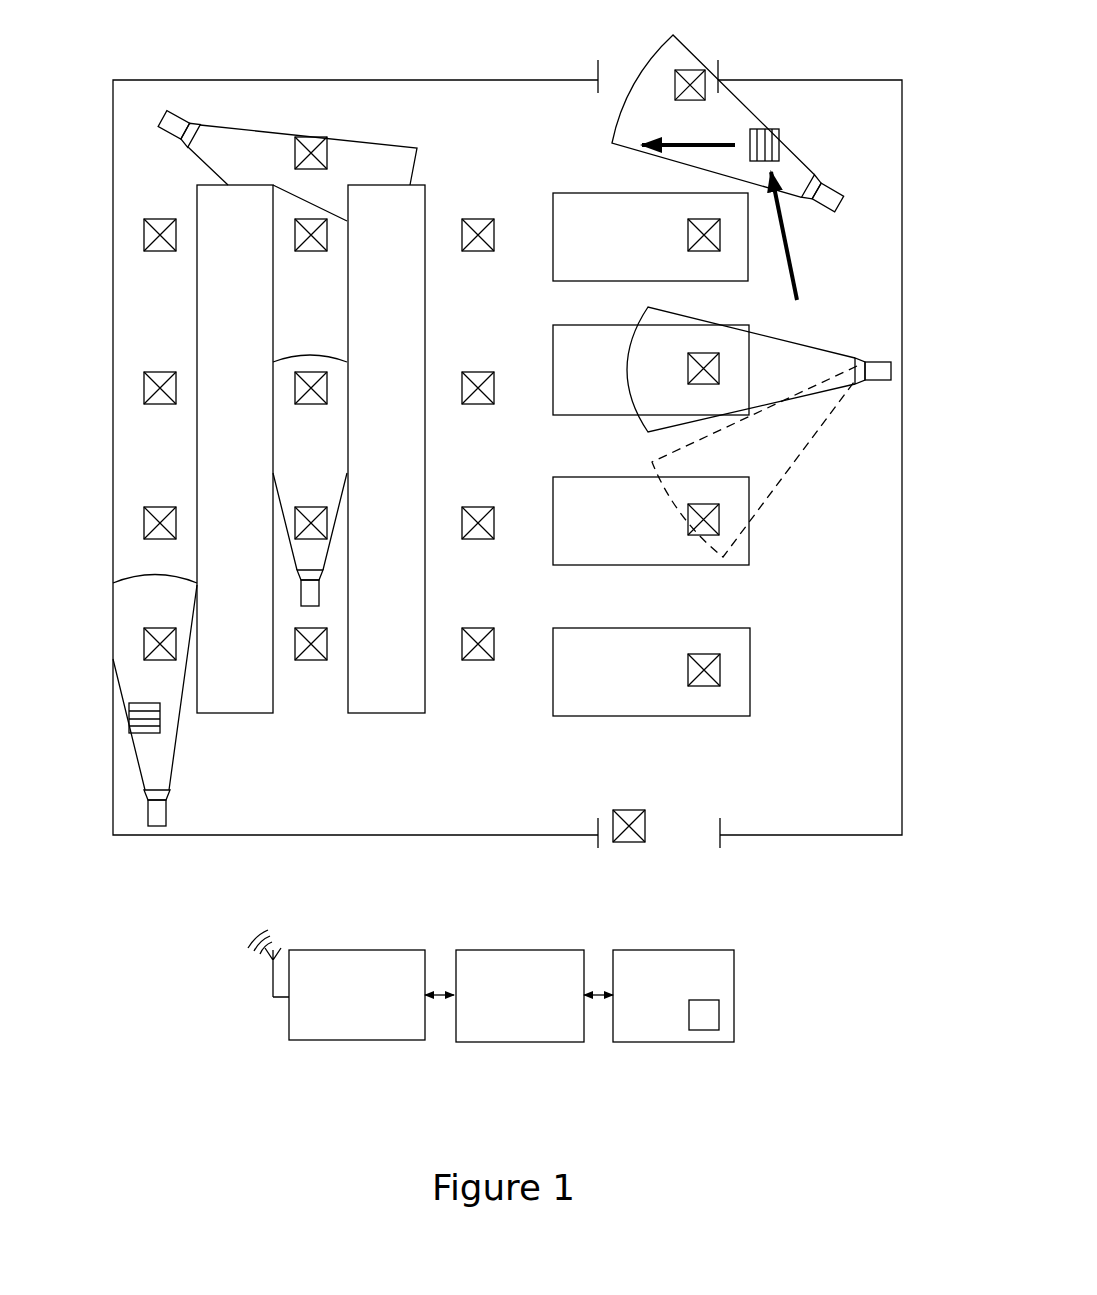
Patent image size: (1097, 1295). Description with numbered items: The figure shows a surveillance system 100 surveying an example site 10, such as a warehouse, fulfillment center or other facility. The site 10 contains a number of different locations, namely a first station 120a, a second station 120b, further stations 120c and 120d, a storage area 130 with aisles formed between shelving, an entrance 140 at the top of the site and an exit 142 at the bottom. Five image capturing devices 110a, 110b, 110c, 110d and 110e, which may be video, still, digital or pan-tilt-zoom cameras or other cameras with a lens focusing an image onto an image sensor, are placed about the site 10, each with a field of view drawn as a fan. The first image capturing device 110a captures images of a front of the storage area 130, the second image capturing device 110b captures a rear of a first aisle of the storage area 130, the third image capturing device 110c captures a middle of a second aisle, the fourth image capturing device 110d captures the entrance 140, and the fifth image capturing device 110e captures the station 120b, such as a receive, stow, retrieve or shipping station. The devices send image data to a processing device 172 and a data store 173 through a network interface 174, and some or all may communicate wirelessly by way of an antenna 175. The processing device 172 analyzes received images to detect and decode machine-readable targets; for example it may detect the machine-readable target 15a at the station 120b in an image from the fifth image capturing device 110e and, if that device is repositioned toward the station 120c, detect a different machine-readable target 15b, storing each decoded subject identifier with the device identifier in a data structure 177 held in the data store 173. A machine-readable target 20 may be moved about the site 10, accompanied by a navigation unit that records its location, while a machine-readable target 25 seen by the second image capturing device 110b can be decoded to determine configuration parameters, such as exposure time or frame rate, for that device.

The site 10 is at (218, 857).
The machine-readable target 15a is at (688, 365).
The machine-readable target 15b is at (708, 504).
The machine-readable target 20 is at (778, 131).
The machine-readable target 25 is at (134, 703).
The surveillance system 100 is at (531, 1007).
The first image capturing device 110a is at (199, 125).
The second image capturing device 110b is at (167, 820).
The third image capturing device 110c is at (318, 590).
The fourth image capturing device 110d is at (831, 190).
The fifth image capturing device 110e is at (873, 363).
The first station 120a is at (578, 193).
The second station 120b is at (588, 325).
The station 120c is at (590, 477).
The station 120d is at (578, 628).
The storage area 130 is at (297, 733).
The entrance 140 is at (621, 86).
The exit 142 is at (678, 813).
The processing device 172 is at (528, 950).
The data store 173 is at (704, 950).
The network interface 174 is at (355, 950).
The antenna 175 is at (275, 1000).
The data structure 177 is at (719, 1008).